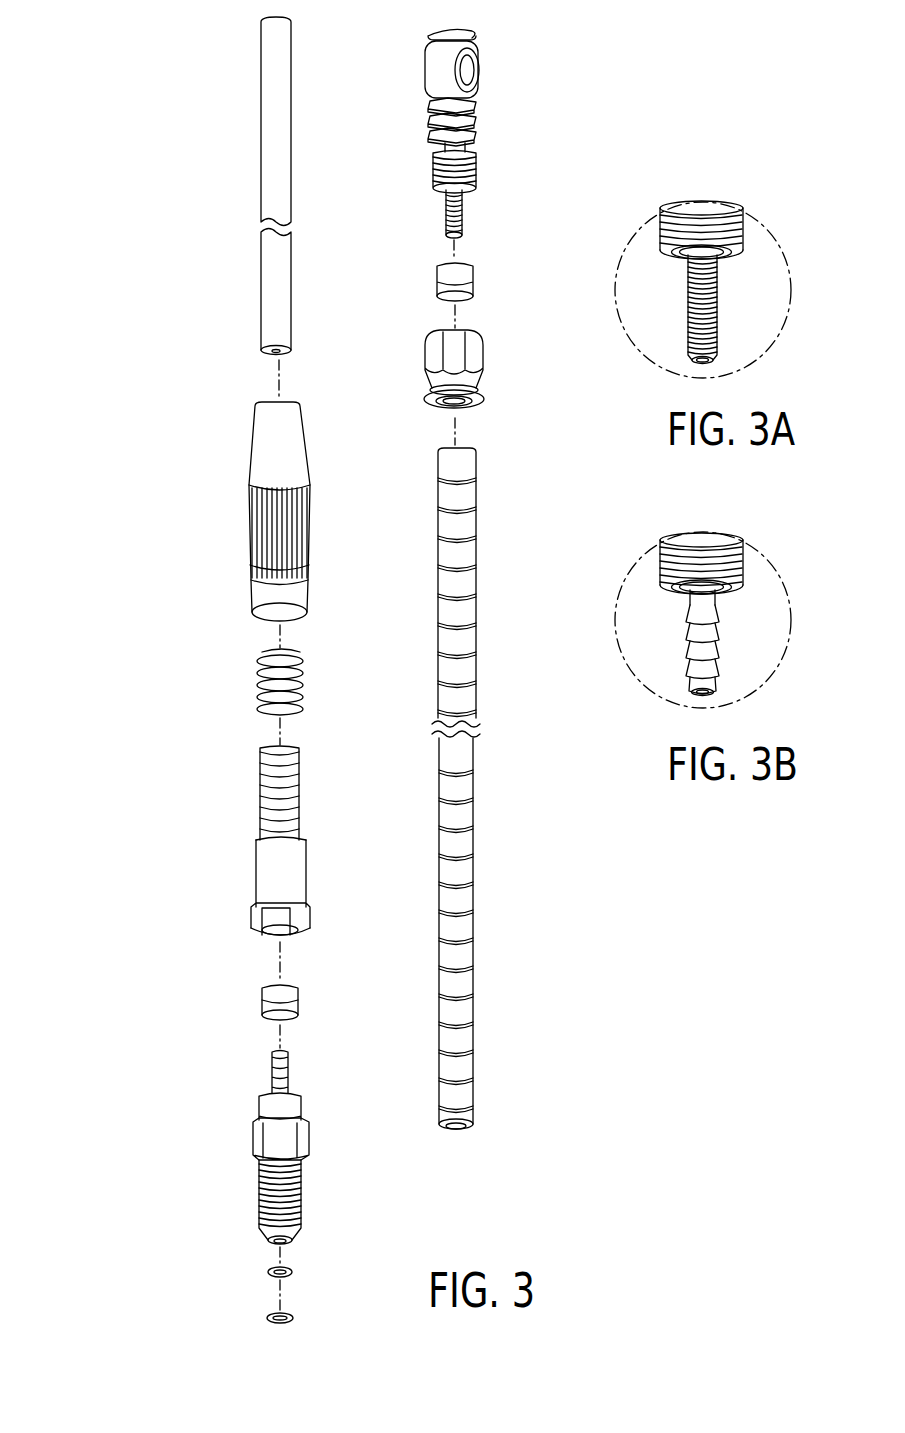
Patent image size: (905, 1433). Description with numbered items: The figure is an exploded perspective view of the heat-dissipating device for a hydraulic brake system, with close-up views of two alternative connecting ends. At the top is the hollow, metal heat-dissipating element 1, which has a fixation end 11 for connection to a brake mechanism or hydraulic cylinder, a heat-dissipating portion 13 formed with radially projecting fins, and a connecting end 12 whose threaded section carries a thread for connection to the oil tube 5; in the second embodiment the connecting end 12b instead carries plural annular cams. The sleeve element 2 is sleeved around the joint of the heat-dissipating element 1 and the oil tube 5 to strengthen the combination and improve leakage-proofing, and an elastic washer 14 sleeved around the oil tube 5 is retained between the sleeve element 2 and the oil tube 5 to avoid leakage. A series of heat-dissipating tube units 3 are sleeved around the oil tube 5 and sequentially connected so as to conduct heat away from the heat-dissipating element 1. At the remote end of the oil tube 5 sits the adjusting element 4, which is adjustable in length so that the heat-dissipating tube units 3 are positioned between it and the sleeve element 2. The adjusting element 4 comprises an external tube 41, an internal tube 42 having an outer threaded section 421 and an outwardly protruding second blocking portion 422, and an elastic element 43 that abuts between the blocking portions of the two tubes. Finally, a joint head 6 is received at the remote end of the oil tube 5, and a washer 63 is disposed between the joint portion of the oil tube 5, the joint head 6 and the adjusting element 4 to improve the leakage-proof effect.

In FIG. 3, the heat-dissipating element 1 is at (541, 112).
In FIG. 3, the fixation end 11 is at (470, 70).
In FIG. 3, the heat-dissipating portion 13 is at (475, 128).
In FIG. 3, the connecting end 12 is at (470, 212).
In FIG. 3A, the connecting end 12 is at (714, 298).
In FIG. 3B, the connecting end 12b is at (708, 635).
In FIG. 3, the elastic washer 14 is at (478, 270).
In FIG. 3, the sleeve element 2 is at (480, 358).
In FIG. 3, the heat-dissipating tube unit 3 is at (466, 548).
In FIG. 3, the brake oil tube 5 is at (275, 153).
In FIG. 3, the adjusting element 4 is at (116, 488).
In FIG. 3, the external tube 41 is at (216, 524).
In FIG. 3, the elastic element 43 is at (262, 665).
In FIG. 3, the internal tube 42 is at (220, 851).
In FIG. 3, the outer threaded section 421 is at (270, 757).
In FIG. 3, the second blocking portion 422 is at (270, 813).
In FIG. 3, the washer 63 is at (265, 998).
In FIG. 3, the joint head 6 is at (211, 1174).